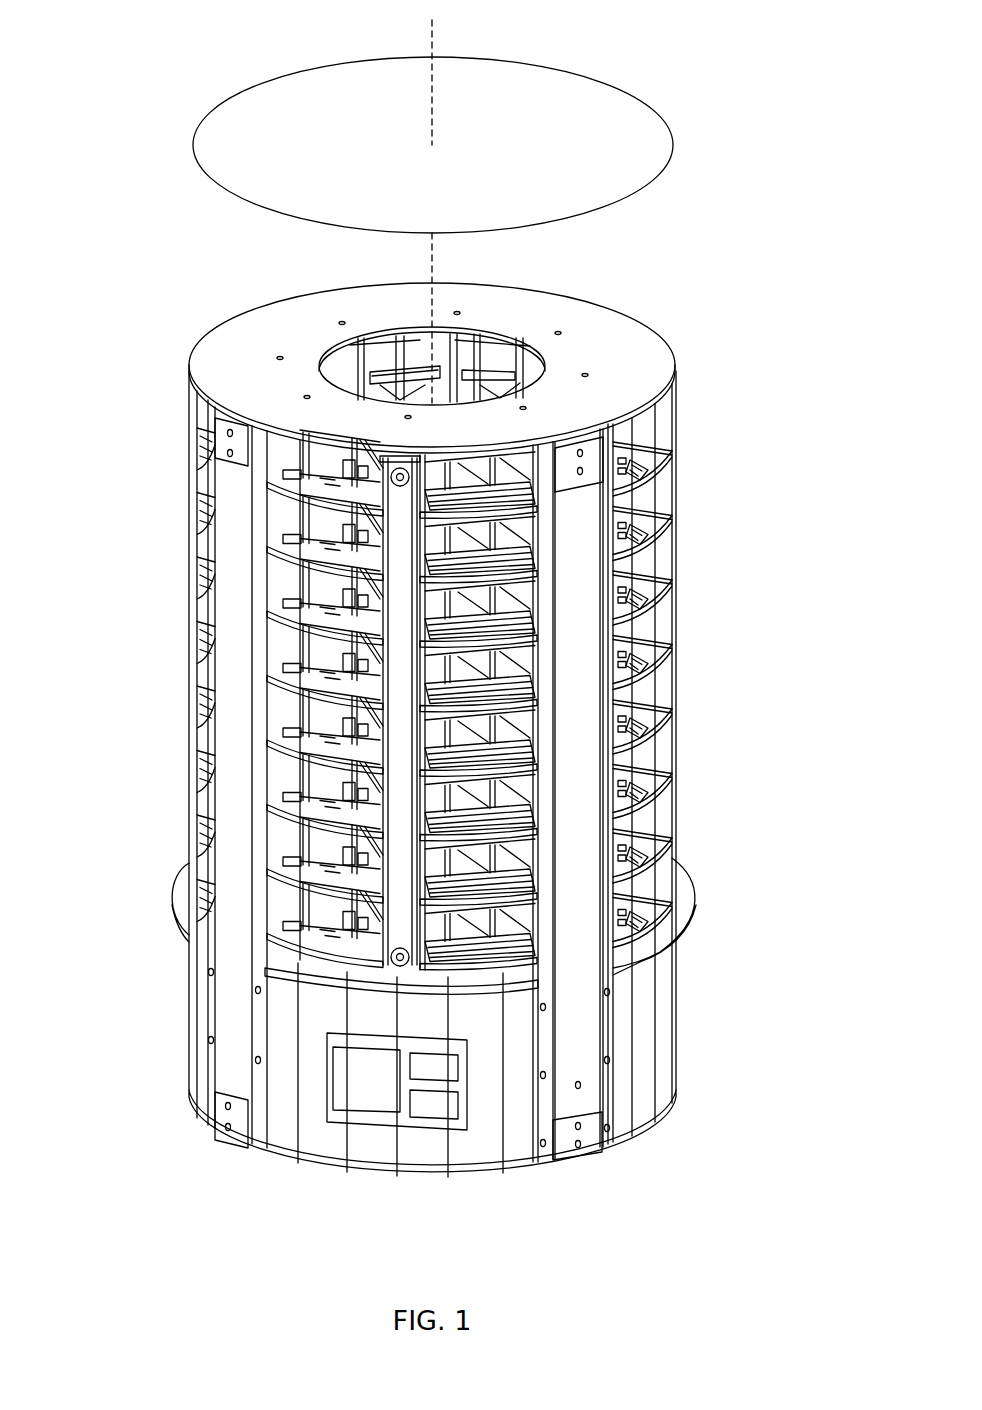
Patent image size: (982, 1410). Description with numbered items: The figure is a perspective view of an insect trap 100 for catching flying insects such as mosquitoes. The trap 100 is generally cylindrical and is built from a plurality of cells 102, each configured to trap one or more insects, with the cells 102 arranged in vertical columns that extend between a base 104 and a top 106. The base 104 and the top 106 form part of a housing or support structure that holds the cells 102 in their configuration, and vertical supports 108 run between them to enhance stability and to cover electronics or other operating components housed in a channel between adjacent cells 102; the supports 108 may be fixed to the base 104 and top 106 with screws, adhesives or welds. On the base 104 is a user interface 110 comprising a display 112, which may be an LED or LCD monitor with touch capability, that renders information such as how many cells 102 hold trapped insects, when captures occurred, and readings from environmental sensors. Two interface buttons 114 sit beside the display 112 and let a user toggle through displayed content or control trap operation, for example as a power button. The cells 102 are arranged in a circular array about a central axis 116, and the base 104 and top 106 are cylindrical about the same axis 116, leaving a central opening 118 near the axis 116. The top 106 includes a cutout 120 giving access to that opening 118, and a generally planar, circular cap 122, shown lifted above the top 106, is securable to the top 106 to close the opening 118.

The insect trap 100 is at (216, 56).
The cells 102 is at (650, 430).
The base 104 is at (645, 1047).
The top 106 is at (640, 357).
The vertical supports 108 is at (577, 673).
The user interface 110 is at (403, 1122).
The display 112 is at (362, 1092).
The interface buttons 114 is at (436, 1107).
The central axis 116 is at (431, 257).
The central opening 118 is at (394, 345).
The cutout 120 is at (477, 343).
The cap 122 is at (570, 122).